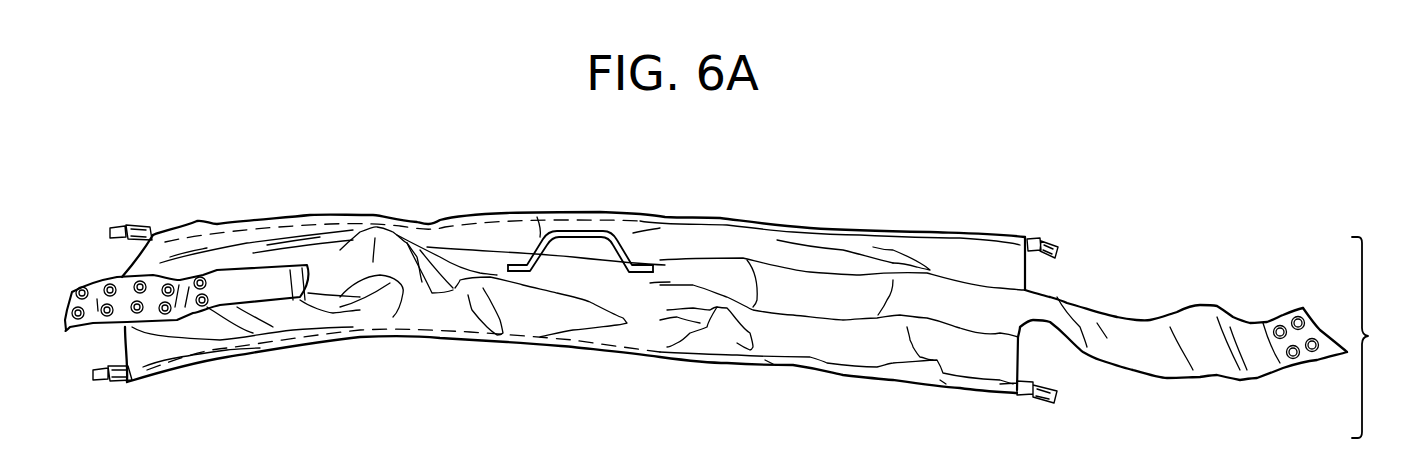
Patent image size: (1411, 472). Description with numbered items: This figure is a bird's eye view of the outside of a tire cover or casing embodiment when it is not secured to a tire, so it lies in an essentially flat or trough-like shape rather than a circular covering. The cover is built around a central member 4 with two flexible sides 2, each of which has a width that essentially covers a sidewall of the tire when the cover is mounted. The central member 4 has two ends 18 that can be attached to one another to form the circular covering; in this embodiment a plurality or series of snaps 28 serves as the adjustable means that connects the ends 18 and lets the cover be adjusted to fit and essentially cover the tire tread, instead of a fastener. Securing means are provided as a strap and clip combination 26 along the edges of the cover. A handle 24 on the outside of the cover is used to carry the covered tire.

The flexible sides 2 is at (1010, 273).
The central member 4 is at (827, 280).
The ends 18 is at (1378, 335).
The handle 24 is at (578, 231).
The strap and clip combination 26 is at (676, 220).
The snaps 28 is at (92, 292).